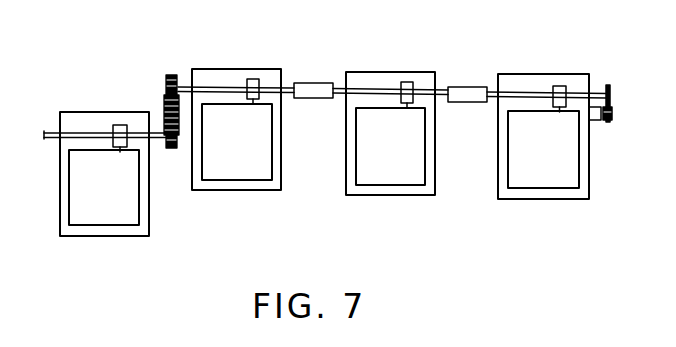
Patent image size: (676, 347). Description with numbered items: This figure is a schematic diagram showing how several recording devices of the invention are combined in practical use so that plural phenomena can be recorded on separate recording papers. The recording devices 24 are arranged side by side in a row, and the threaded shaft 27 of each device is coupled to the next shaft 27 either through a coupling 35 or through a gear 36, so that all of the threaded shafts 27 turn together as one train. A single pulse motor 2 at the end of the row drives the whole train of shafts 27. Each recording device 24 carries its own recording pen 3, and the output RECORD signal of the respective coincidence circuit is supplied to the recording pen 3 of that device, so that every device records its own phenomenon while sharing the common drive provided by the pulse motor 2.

The pulse motor 2 is at (596, 122).
The recording pen 3 is at (120, 150).
The frame 24 is at (77, 197).
The threaded shaft 27 is at (50, 137).
The coupling 35 is at (312, 83).
The gear 36 is at (164, 103).